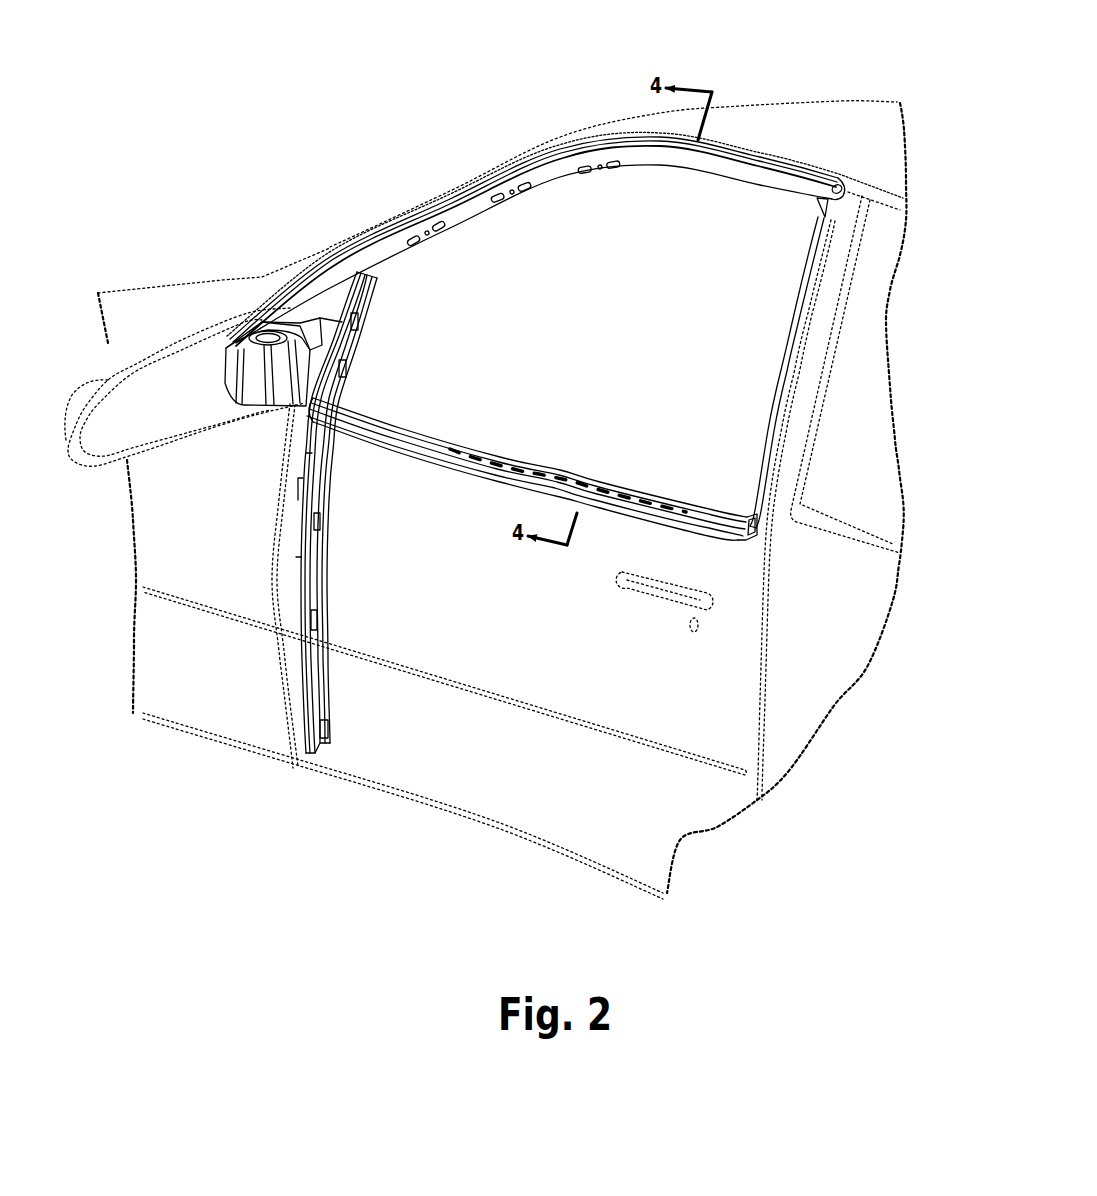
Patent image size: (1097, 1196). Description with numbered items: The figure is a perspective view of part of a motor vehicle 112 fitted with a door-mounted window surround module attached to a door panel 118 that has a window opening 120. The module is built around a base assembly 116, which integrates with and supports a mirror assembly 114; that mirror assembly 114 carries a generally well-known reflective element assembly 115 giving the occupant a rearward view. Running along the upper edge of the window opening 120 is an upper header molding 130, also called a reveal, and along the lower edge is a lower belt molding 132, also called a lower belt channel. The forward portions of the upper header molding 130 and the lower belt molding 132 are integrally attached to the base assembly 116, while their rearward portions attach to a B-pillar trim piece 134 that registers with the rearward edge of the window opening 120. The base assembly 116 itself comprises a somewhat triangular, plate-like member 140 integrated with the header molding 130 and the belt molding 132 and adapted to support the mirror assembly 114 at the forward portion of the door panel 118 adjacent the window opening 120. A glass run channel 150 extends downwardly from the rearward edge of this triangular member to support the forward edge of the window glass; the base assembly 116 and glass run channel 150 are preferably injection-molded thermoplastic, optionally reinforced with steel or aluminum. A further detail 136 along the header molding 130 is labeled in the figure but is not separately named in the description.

The motor vehicle 112 is at (828, 90).
The mirror assembly 114 is at (100, 352).
The reflective element assembly 115 is at (137, 410).
The base assembly 116 is at (270, 304).
The door panel 118 is at (440, 742).
The window opening 120 is at (533, 367).
The upper header molding 130 is at (583, 417).
The lower belt molding 132 is at (427, 453).
The B-pillar trim piece 134 is at (797, 308).
The upper rail 136 is at (450, 190).
The plate-like member 140 is at (327, 302).
The glass run channel 150 is at (313, 600).